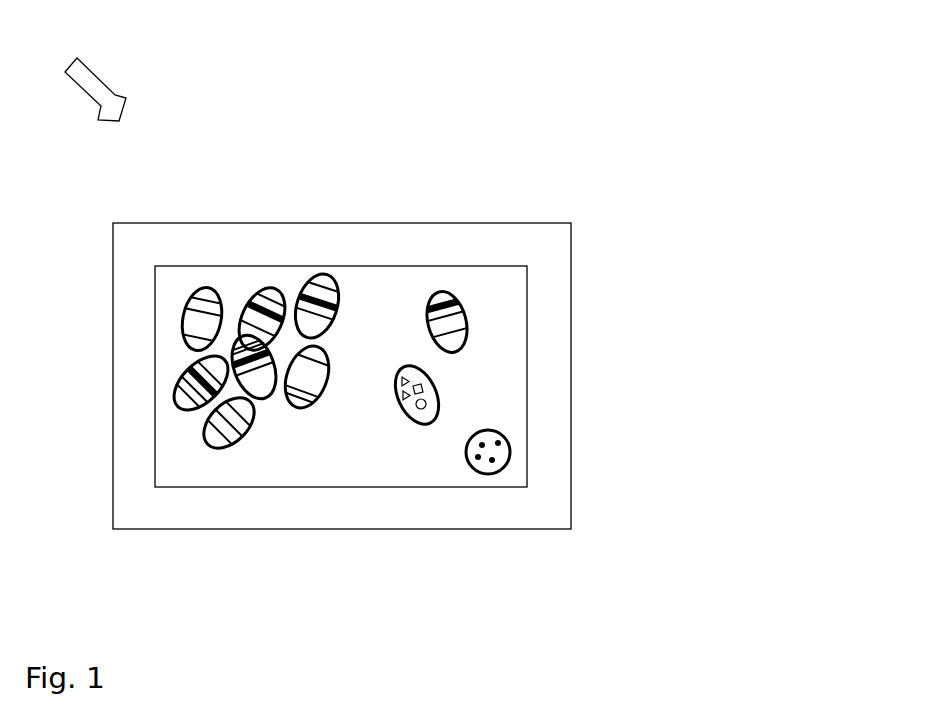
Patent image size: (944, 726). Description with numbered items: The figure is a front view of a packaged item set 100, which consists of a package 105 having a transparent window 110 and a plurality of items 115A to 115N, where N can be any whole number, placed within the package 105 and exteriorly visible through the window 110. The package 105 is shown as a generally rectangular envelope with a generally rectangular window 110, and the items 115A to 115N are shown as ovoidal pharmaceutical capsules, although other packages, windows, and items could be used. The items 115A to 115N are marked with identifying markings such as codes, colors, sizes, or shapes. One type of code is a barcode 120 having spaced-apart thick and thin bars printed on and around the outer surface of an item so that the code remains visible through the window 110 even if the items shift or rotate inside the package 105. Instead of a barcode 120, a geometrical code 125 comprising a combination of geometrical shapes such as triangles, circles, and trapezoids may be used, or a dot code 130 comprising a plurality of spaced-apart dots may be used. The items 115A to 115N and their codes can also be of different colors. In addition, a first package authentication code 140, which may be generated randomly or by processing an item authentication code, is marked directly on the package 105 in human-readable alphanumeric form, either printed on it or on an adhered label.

The packaged item set 100 is at (127, 91).
The package 105 is at (380, 211).
The transparent window 110 is at (378, 454).
The item 115A is at (230, 454).
The item 115N is at (229, 423).
The barcode 120 is at (463, 296).
The geometrical code 125 is at (434, 377).
The dot code 130 is at (510, 440).
The first package authentication code 140 is at (526, 216).